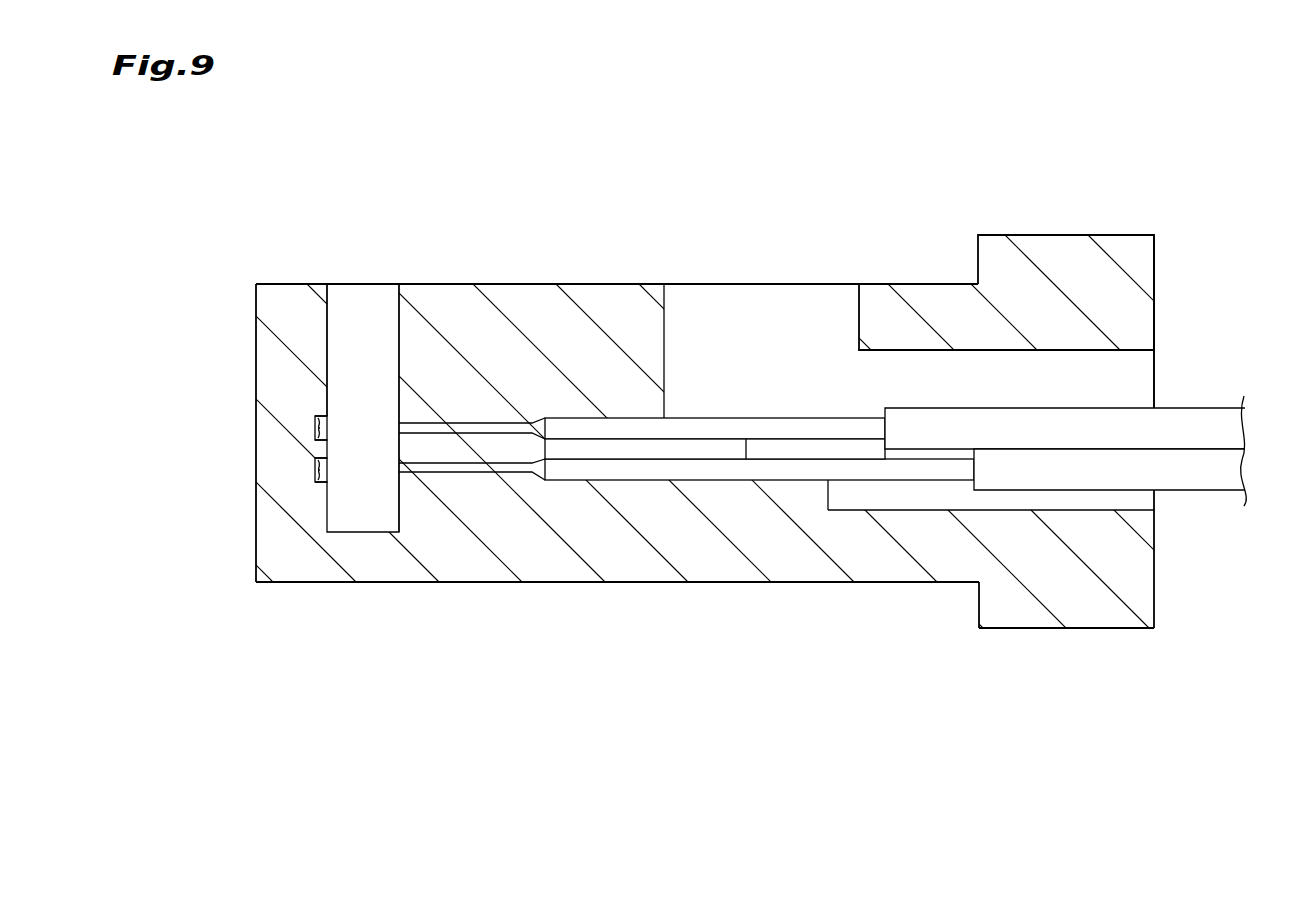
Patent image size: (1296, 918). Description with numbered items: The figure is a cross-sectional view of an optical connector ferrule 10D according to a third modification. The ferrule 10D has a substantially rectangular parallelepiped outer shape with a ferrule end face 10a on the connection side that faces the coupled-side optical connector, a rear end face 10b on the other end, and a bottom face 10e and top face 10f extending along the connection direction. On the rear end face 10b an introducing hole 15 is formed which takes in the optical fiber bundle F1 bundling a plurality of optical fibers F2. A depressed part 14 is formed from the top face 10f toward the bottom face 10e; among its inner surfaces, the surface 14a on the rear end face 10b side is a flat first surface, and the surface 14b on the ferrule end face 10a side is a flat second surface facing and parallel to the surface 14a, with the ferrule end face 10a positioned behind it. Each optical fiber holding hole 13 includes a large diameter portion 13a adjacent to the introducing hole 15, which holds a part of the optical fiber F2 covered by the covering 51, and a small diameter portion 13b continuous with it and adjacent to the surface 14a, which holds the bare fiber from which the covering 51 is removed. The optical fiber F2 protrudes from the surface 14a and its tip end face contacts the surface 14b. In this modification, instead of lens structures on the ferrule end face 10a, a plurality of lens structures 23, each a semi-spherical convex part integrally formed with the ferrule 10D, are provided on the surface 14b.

The ferrule end face 10a is at (256, 380).
The rear end face 10b is at (1155, 275).
The ferrule 10D is at (1087, 233).
The bottom face 10e is at (636, 584).
The top face 10f is at (617, 284).
The optical fiber holding hole 13 is at (686, 555).
The large diameter portion 13a is at (560, 430).
The small diameter portion 13b is at (417, 436).
The depressed part 14 is at (390, 357).
The surface 14a is at (398, 308).
The surface 14b is at (328, 347).
The introducing hole 15 is at (1131, 384).
The lens structure 23 is at (325, 428).
The covering 51 is at (808, 467).
The optical fiber bundle F1 is at (1199, 404).
The optical fiber F2 is at (723, 454).